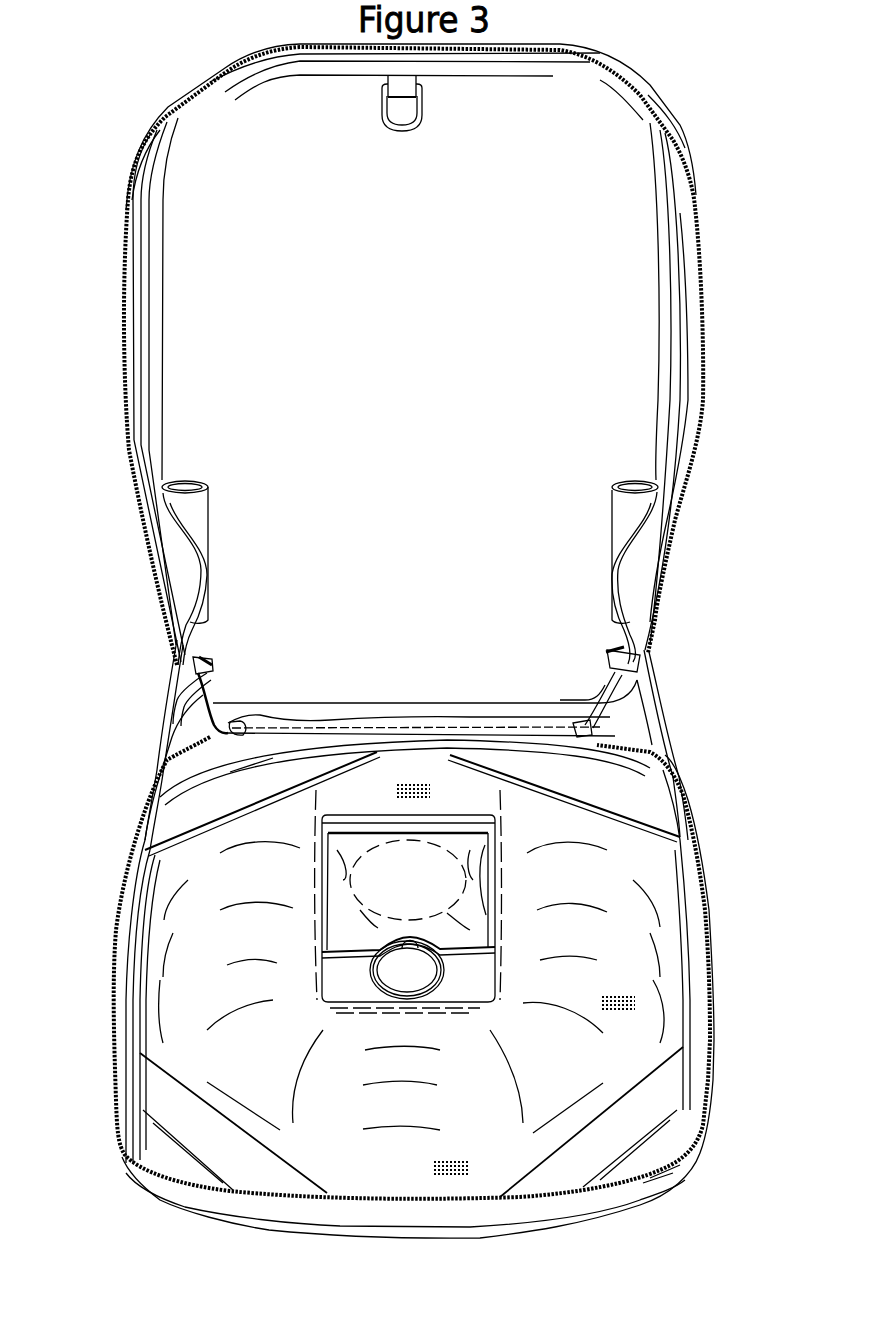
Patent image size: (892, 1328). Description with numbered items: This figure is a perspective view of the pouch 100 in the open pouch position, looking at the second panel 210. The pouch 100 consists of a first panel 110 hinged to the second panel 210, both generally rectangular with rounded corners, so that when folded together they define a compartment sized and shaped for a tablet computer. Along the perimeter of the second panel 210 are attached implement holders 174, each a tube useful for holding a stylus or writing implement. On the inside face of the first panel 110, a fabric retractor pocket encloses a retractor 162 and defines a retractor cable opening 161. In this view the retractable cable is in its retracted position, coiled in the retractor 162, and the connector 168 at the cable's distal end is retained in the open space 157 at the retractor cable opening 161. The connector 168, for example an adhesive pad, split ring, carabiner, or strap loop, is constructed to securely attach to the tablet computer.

The pouch 100 is at (715, 107).
The first panel 110 is at (272, 1078).
The second panel 210 is at (429, 340).
The implement holder 174 is at (200, 515).
The retractor 162 is at (350, 876).
The retractor cable opening 161 is at (395, 940).
The connector 168 is at (378, 977).
The open space 157 is at (457, 982).